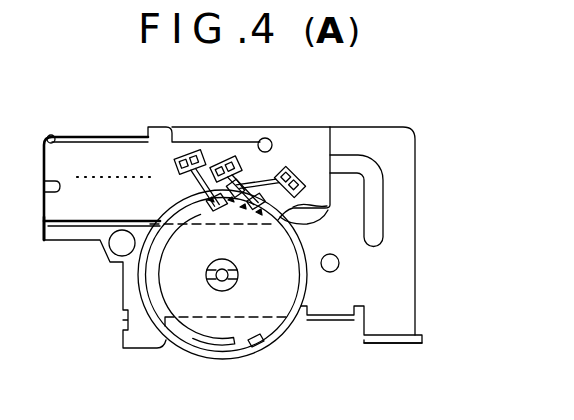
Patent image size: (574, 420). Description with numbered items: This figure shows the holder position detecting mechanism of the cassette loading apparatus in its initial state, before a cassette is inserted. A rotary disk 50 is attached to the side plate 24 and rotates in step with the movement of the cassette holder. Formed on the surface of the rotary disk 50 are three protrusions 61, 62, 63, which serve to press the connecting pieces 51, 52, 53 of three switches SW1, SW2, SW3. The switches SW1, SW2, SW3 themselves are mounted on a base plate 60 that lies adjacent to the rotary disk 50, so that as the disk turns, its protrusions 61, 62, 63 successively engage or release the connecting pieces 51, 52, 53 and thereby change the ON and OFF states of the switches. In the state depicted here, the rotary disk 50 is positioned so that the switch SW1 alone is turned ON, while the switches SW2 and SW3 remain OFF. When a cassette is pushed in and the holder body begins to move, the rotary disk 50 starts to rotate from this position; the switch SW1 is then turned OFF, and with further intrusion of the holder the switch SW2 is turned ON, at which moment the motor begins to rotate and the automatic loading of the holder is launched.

The side plate 24 is at (402, 262).
The rotary disk 50 is at (205, 328).
The connecting piece 51 is at (327, 206).
The connecting piece 52 is at (228, 208).
The connecting piece 53 is at (175, 208).
The base plate 60 is at (315, 152).
The protrusion 61 is at (307, 227).
The protrusion 62 is at (170, 290).
The protrusion 63 is at (258, 342).
The switch SW1 is at (296, 168).
The switch SW2 is at (232, 155).
The switch SW3 is at (190, 150).